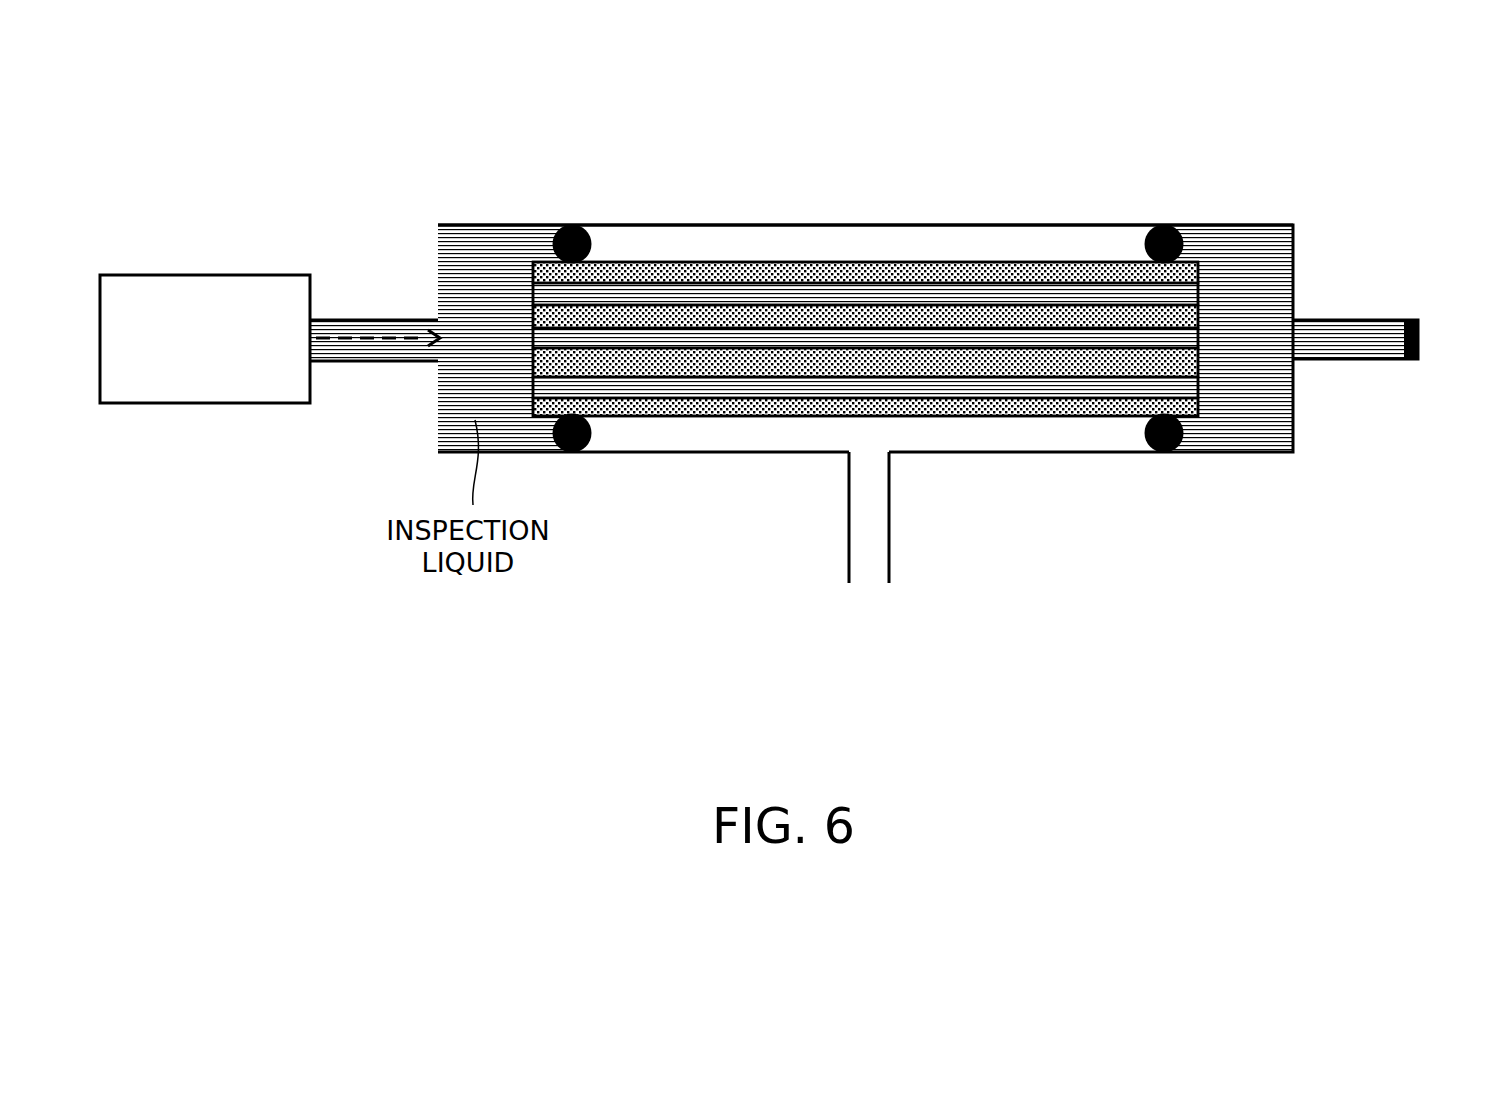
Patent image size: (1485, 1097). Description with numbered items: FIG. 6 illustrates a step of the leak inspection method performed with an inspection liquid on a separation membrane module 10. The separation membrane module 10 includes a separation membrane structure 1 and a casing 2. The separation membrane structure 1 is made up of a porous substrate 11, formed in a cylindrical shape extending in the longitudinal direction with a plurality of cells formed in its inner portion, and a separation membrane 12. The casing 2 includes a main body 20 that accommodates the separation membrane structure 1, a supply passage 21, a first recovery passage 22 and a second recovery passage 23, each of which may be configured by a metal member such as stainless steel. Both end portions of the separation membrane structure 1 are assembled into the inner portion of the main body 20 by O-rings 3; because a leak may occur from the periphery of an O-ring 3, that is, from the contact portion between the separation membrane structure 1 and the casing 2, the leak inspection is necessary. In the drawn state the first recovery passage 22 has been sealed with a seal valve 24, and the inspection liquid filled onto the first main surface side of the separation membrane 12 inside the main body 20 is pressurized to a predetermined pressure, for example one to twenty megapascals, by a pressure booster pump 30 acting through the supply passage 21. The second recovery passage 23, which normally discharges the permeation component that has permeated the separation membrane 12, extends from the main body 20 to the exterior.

The separation membrane module 10 is at (380, 151).
The separation membrane structure 1 is at (661, 250).
The casing 2 is at (1293, 218).
The O-ring 3 is at (553, 230).
The porous substrate 11 is at (681, 416).
The separation membrane 12 is at (772, 392).
The main body 20 is at (803, 224).
The supply passage 21 is at (355, 320).
The first recovery passage 22 is at (1355, 320).
The second recovery passage 23 is at (889, 503).
The seal valve 24 is at (1419, 340).
The pressure booster pump 30 is at (250, 275).